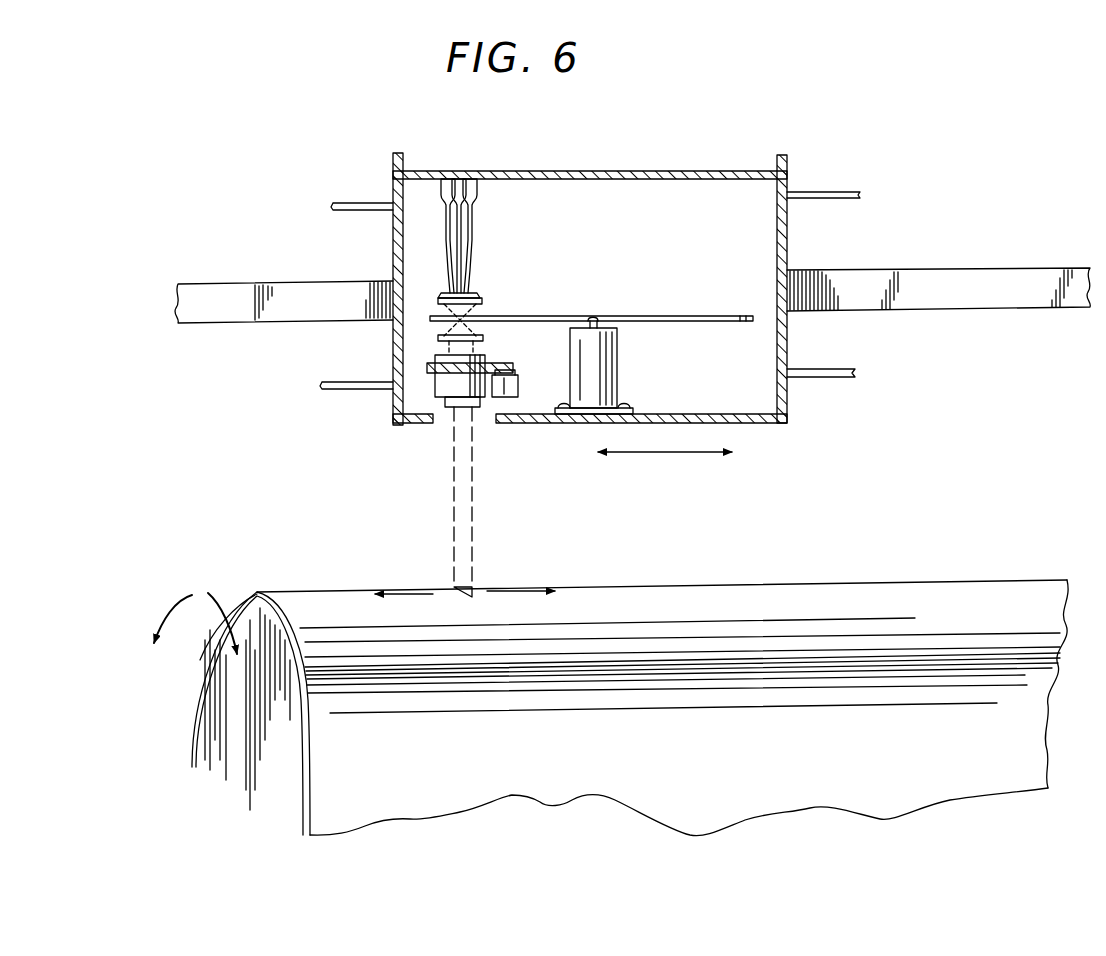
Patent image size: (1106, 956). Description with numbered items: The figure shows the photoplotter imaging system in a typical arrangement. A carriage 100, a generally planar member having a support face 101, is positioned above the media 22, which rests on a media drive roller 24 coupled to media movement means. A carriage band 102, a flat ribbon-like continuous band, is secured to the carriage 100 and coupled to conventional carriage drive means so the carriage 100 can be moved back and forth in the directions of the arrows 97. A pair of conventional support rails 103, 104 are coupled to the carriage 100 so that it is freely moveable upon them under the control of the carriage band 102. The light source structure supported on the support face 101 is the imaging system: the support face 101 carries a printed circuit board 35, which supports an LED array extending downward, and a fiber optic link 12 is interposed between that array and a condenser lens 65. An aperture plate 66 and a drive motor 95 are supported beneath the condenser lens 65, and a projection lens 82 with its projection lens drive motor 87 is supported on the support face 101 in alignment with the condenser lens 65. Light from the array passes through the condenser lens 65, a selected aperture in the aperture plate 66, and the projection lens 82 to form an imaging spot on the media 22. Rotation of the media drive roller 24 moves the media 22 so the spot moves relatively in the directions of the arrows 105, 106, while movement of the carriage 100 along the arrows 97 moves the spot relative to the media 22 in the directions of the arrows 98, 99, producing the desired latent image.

The fiber optic link 12 is at (478, 258).
The media 22 is at (604, 680).
The media drive roller 24 is at (230, 700).
The printed circuit board 35 is at (598, 172).
The condenser lens 65 is at (490, 298).
The aperture plate 66 is at (682, 316).
The projection lens 82 is at (435, 383).
The projection lens drive motor 87 is at (516, 387).
The drive motor 95 is at (620, 370).
The arrows 97 is at (666, 457).
The arrow 98 is at (402, 592).
The arrow 99 is at (518, 590).
The carriage 100 is at (598, 281).
The support face 101 is at (752, 415).
The carriage band 102 is at (912, 270).
The support rail 103 is at (366, 210).
The support rail 104 is at (346, 389).
The arrow 105 is at (262, 594).
The arrow 106 is at (172, 604).